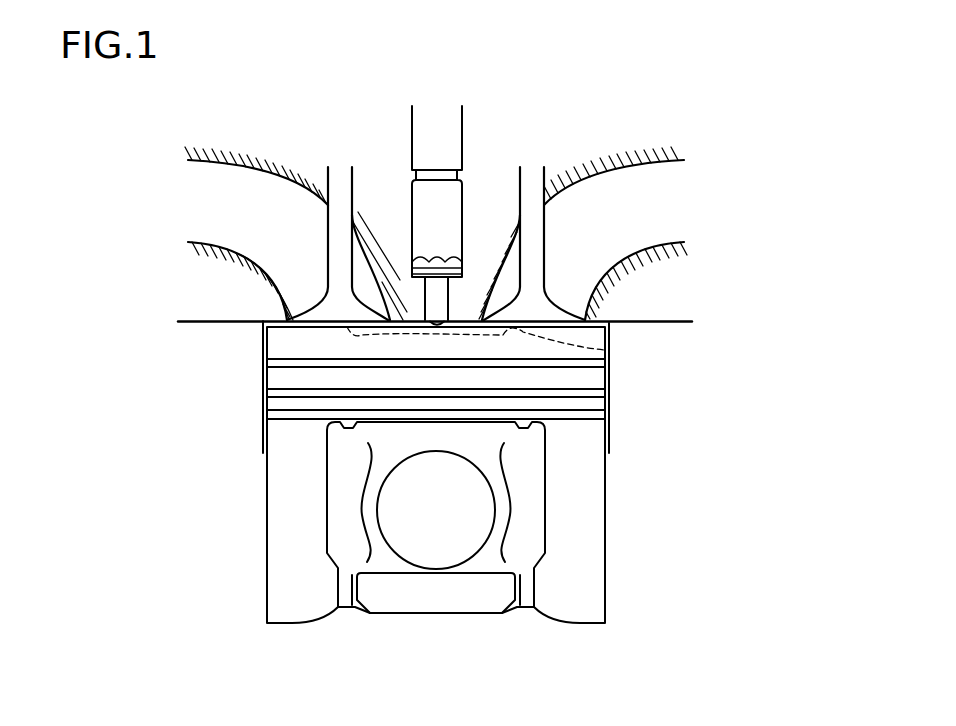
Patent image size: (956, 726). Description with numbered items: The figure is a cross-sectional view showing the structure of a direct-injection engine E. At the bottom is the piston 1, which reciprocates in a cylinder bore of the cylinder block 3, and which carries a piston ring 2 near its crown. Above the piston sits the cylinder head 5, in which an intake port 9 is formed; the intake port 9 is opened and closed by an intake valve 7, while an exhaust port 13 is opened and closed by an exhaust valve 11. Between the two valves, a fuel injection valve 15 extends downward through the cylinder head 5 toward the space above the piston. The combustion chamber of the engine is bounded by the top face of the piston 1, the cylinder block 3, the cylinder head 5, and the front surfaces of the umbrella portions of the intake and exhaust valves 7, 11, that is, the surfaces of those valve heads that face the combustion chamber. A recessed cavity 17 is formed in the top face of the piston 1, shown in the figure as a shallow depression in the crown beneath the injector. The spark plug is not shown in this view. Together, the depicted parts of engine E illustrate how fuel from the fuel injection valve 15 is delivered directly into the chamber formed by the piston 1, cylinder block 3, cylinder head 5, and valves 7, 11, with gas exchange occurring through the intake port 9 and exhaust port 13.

The direct-injection engine E is at (706, 184).
The piston 1 is at (605, 540).
The piston ring 2 is at (602, 363).
The cylinder block 3 is at (647, 328).
The cylinder head 5 is at (227, 317).
The intake valve 7 is at (540, 243).
The intake port 9 is at (578, 285).
The exhaust valve 11 is at (333, 243).
The exhaust port 13 is at (297, 283).
The fuel injection valve 15 is at (448, 128).
The recessed cavity 17 is at (605, 350).